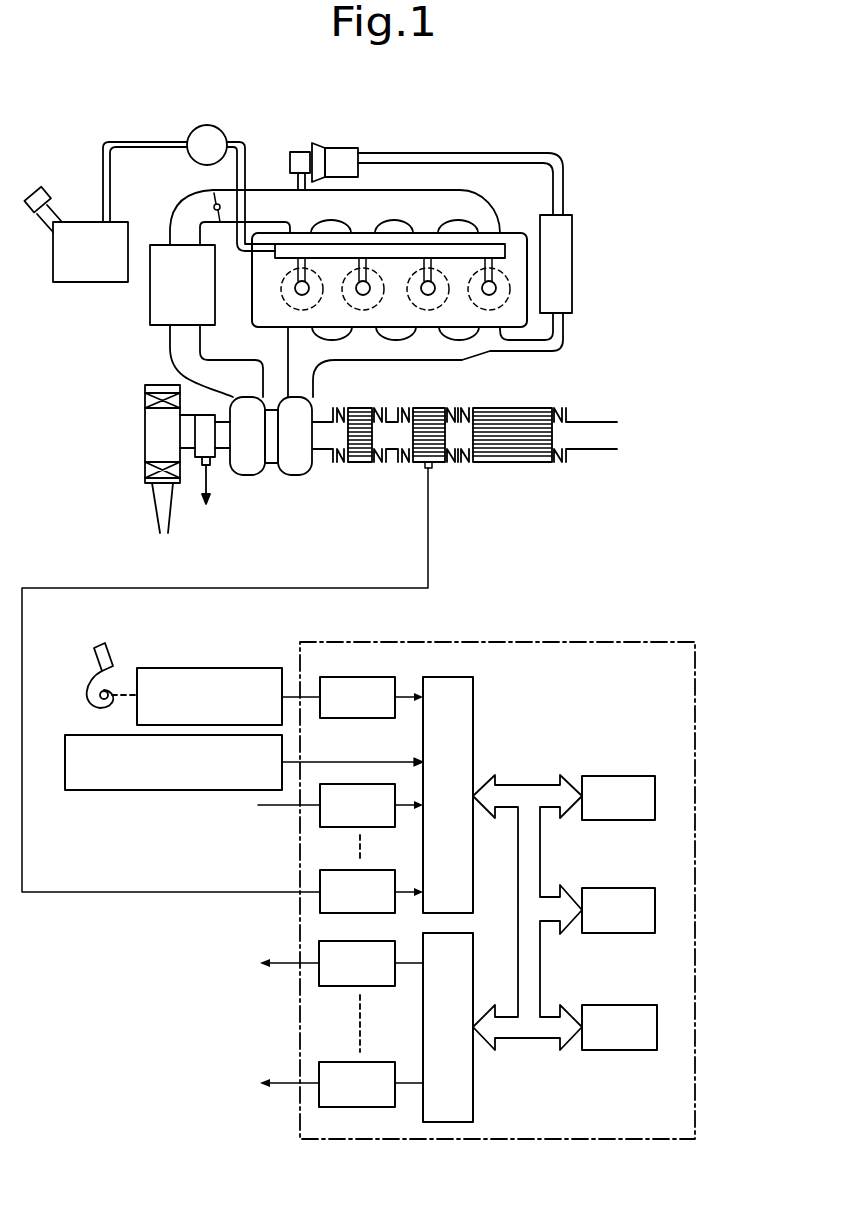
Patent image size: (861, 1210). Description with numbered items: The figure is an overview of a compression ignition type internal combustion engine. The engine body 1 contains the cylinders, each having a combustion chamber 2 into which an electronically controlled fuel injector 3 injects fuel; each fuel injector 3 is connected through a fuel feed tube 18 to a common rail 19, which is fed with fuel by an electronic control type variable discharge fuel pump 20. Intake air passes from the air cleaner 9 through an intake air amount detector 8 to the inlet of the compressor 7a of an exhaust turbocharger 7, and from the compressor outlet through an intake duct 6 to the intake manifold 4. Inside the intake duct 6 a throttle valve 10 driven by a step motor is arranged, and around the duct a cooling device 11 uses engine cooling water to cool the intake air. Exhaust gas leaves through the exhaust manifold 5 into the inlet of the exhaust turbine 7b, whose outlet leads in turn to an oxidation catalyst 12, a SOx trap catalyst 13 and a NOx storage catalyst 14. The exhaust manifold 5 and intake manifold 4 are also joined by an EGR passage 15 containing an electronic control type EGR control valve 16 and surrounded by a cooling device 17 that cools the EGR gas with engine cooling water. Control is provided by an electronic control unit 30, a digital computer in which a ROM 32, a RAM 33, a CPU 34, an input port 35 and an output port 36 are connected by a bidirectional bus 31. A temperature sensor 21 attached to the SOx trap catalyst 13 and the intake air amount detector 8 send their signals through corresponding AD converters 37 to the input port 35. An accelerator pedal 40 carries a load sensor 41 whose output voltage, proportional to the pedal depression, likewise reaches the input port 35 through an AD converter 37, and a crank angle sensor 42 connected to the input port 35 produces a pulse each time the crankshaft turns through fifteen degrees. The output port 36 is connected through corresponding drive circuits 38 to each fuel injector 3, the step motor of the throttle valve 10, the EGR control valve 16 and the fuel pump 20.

The engine body 1 is at (529, 226).
The combustion chamber 2 is at (290, 302).
The fuel injector 3 is at (295, 286).
The intake manifold 4 is at (470, 200).
The exhaust manifold 5 is at (380, 353).
The intake duct 6 is at (178, 227).
The exhaust turbocharger 7 is at (275, 484).
The compressor 7a is at (250, 463).
The exhaust turbine 7b is at (297, 463).
The intake air amount detector 8 is at (201, 463).
The air cleaner 9 is at (150, 437).
The throttle valve 10 is at (213, 193).
The cooling device 11 is at (160, 308).
The oxidation catalyst 12 is at (358, 463).
The SOx trap catalyst 13 is at (423, 463).
The NOx storage catalyst 14 is at (513, 452).
The EGR passage 15 is at (438, 157).
The EGR control valve 16 is at (302, 157).
The cooling device 17 is at (571, 262).
The fuel feed tube 18 is at (297, 280).
The common rail 19 is at (400, 250).
The fuel pump 20 is at (195, 130).
The temperature sensor 21 is at (431, 469).
The electronic control unit 30 is at (700, 662).
The bidirectional bus 31 is at (525, 785).
The ROM 32 is at (620, 776).
The RAM 33 is at (618, 888).
The CPU 34 is at (617, 1005).
The input port 35 is at (475, 684).
The output port 36 is at (475, 1107).
The AD converter 37 is at (376, 658).
The drive circuit 38 is at (318, 1064).
The accelerator pedal 40 is at (107, 653).
The load sensor 41 is at (227, 668).
The crank angle sensor 42 is at (153, 790).